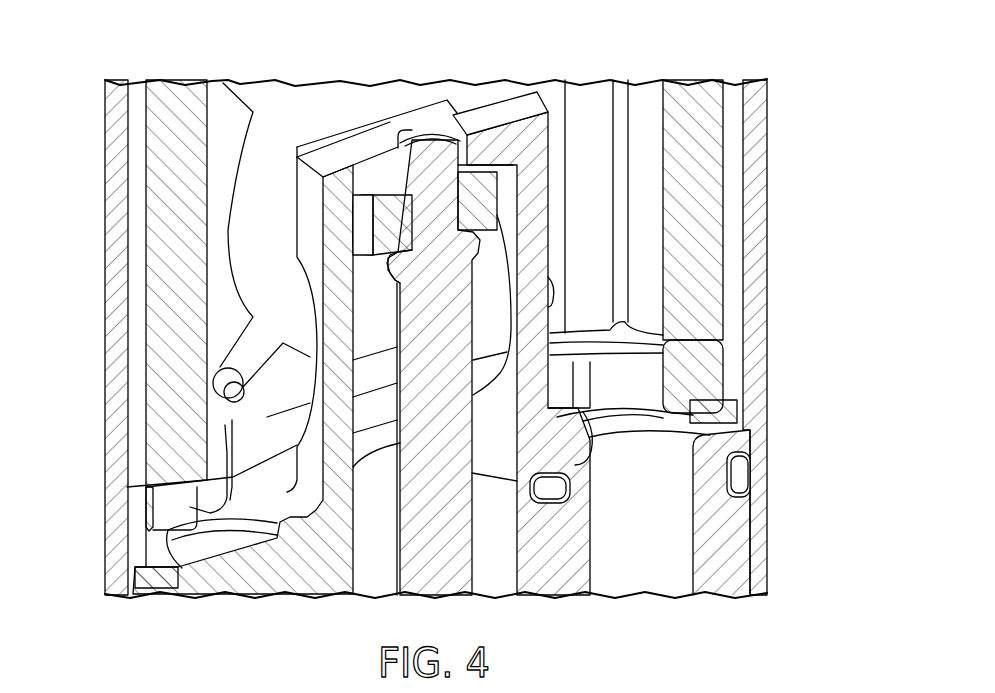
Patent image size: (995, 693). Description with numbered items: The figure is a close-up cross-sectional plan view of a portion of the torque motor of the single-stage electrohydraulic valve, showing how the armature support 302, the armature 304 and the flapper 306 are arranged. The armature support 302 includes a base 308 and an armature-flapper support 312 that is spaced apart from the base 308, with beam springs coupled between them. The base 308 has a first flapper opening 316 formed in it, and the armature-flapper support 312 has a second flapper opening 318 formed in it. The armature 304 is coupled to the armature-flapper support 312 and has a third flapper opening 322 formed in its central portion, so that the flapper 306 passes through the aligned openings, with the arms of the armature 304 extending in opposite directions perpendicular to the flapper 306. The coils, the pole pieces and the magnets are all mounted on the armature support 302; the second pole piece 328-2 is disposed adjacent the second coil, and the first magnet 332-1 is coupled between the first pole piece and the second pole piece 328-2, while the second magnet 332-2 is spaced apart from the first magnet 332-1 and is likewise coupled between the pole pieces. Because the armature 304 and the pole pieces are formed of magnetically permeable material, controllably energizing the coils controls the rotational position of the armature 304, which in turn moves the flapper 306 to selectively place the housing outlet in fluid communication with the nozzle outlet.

The armature support 302 is at (745, 412).
The armature 304 is at (387, 200).
The flapper 306 is at (420, 323).
The base 308 is at (143, 577).
The armature-flapper support 312 is at (503, 103).
The first flapper opening 316 is at (495, 480).
The second flapper opening 318 is at (448, 137).
The third flapper opening 322 is at (400, 228).
The second pole piece 328-2 is at (718, 366).
The first magnet 332-1 is at (175, 228).
The second magnet 332-2 is at (715, 147).